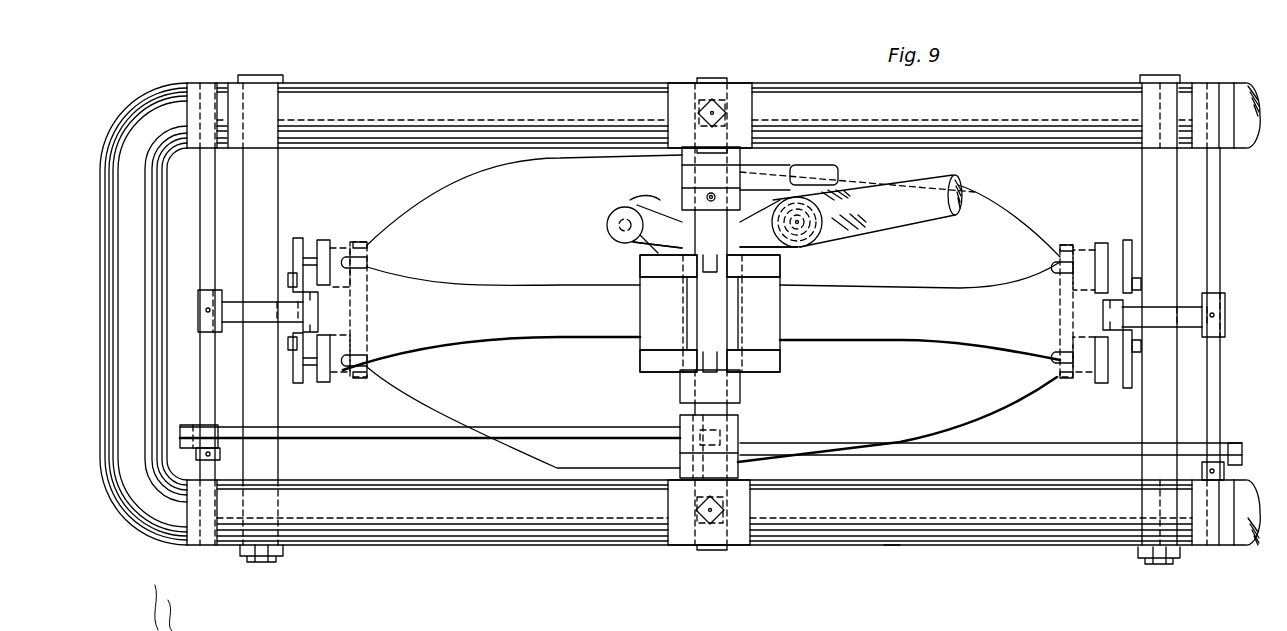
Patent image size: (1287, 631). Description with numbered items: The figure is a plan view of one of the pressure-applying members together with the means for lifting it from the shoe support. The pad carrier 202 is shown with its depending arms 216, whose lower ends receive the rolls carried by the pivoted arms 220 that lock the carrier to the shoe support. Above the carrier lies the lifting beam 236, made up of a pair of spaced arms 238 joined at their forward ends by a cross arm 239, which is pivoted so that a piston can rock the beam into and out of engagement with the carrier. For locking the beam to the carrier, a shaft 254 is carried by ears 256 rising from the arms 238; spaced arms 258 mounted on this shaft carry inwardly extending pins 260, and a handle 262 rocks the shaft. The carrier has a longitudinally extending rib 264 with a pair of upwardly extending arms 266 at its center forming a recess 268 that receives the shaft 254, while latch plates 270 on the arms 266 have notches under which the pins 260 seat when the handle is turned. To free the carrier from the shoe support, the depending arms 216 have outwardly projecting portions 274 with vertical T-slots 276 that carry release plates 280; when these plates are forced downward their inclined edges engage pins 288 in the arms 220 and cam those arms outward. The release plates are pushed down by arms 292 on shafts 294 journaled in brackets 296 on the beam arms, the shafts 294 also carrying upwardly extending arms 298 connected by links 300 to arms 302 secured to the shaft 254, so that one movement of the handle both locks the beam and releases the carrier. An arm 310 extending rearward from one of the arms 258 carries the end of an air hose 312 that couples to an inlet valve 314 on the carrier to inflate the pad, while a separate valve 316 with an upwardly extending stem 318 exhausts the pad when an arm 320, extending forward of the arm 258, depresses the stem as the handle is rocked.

The pad carrier 202 is at (1005, 218).
The depending arms 216 is at (365, 300).
The arms 220 is at (362, 240).
The lifting beam 236 is at (887, 548).
The spaced arms 238 is at (772, 100).
The cross arm 239 is at (140, 128).
The shaft 254 is at (708, 312).
The ears 256 is at (750, 123).
The arms 258 is at (712, 232).
The pins 260 is at (710, 272).
The handle 262 is at (822, 166).
The rib 264 is at (535, 338).
The upwardly extending arms 266 is at (775, 298).
The recess 268 is at (742, 308).
The latch plates 270 is at (648, 265).
The outwardly projecting portions 274 is at (323, 380).
The T-slots 276 is at (300, 256).
The release plates 280 is at (296, 366).
The pins 288 is at (290, 344).
The arms 292 is at (245, 300).
The shafts 294 is at (207, 190).
The brackets 296 is at (200, 92).
The upwardly extending arms 298 is at (200, 465).
The links 300 is at (360, 430).
The arms 302 is at (740, 430).
The arm 310 is at (812, 246).
The air hose 312 is at (917, 210).
The inlet valve 314 is at (810, 246).
The valve 316 is at (616, 215).
The valve stem 318 is at (612, 235).
The arm 320 is at (628, 215).